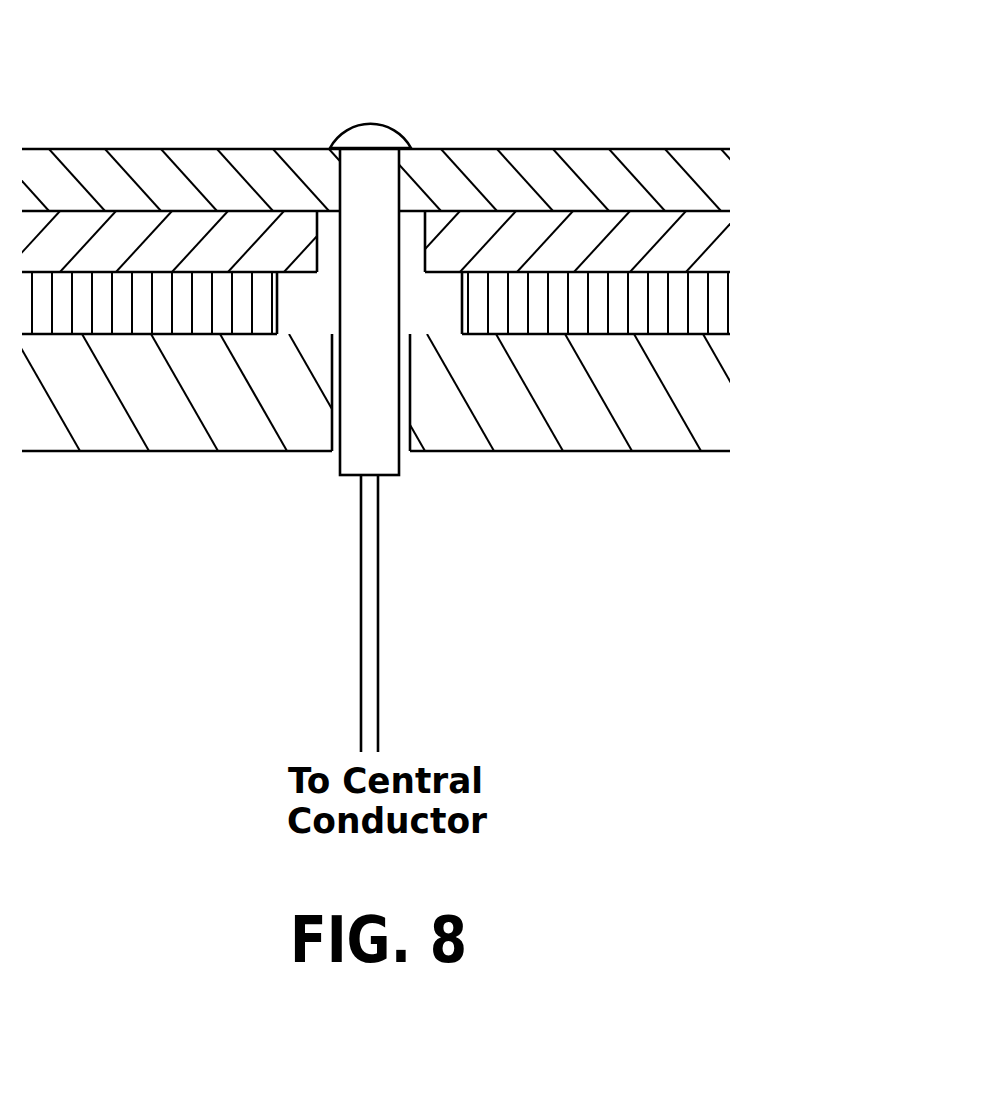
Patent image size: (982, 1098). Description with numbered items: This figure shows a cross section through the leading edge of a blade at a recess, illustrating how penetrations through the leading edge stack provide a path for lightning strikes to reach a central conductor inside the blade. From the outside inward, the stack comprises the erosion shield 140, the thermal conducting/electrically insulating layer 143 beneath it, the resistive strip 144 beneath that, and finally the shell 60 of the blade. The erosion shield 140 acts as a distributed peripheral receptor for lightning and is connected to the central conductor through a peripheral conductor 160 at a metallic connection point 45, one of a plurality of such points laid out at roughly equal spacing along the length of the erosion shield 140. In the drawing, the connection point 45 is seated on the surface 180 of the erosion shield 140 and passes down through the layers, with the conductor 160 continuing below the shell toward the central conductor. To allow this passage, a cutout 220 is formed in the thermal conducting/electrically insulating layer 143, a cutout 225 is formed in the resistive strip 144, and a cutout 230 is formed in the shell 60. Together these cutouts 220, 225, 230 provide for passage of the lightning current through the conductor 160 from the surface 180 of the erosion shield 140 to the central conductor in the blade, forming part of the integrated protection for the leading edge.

The metallic connection point 45 is at (383, 122).
The shell 60 is at (800, 386).
The erosion shield 140 is at (800, 172).
The thermal conducting/electrically insulating layer 143 is at (800, 237).
The resistive strip 144 is at (800, 297).
The peripheral conductor 160 is at (368, 662).
The surface 180 is at (137, 156).
The cutout 220 is at (405, 234).
The cutout 225 is at (433, 297).
The cutout 230 is at (401, 440).